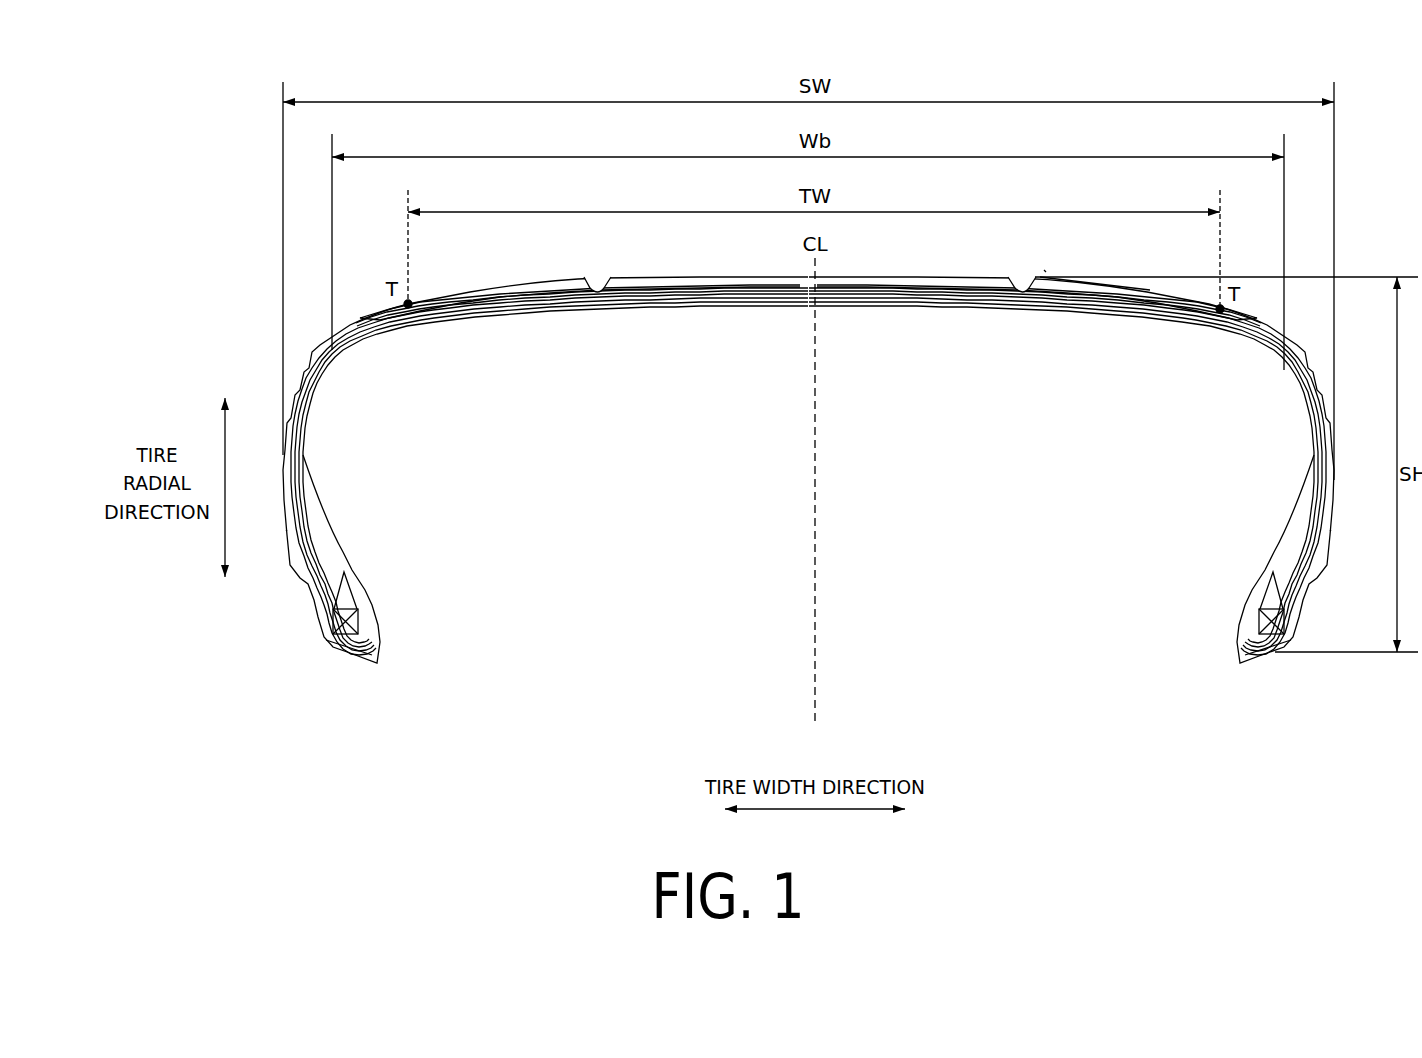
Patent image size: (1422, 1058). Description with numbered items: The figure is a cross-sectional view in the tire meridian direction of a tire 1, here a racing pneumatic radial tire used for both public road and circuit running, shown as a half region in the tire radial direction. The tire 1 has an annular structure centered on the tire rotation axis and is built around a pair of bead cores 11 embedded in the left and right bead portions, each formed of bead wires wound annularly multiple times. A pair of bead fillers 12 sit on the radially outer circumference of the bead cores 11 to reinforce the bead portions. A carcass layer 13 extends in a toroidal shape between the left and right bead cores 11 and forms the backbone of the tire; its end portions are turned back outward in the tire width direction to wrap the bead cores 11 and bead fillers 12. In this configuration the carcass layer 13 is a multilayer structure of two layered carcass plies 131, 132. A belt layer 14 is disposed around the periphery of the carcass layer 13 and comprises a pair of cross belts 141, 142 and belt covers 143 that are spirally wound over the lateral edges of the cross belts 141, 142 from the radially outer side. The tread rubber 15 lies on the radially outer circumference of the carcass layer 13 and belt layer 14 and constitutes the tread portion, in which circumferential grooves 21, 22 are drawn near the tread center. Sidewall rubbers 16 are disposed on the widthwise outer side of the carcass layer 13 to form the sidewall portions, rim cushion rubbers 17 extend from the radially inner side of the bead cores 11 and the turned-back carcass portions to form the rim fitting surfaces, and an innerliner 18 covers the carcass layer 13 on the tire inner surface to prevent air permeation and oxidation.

The tire 1 is at (1050, 268).
The bead core 11 is at (333, 622).
The bead filler 12 is at (341, 596).
The carcass layer 13 is at (1195, 422).
The carcass ply 131 is at (1272, 372).
The carcass ply 132 is at (1290, 402).
The belt layer 14 is at (1155, 392).
The cross belt 141 is at (1093, 314).
The cross belt 142 is at (1128, 318).
The belt cover 143 is at (1165, 322).
The tread rubber 15 is at (1158, 294).
The sidewall rubber 16 is at (283, 466).
The rim cushion rubber 17 is at (368, 647).
The innerliner 18 is at (321, 527).
The circumferential main groove 21 is at (1024, 284).
The circumferential main groove 22 is at (600, 283).